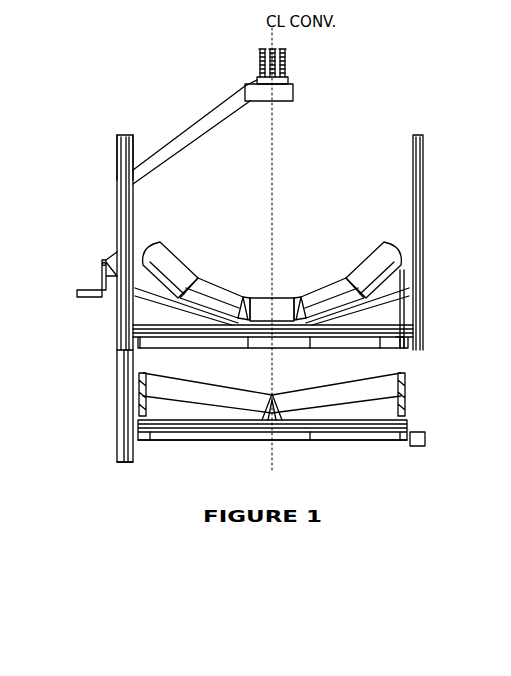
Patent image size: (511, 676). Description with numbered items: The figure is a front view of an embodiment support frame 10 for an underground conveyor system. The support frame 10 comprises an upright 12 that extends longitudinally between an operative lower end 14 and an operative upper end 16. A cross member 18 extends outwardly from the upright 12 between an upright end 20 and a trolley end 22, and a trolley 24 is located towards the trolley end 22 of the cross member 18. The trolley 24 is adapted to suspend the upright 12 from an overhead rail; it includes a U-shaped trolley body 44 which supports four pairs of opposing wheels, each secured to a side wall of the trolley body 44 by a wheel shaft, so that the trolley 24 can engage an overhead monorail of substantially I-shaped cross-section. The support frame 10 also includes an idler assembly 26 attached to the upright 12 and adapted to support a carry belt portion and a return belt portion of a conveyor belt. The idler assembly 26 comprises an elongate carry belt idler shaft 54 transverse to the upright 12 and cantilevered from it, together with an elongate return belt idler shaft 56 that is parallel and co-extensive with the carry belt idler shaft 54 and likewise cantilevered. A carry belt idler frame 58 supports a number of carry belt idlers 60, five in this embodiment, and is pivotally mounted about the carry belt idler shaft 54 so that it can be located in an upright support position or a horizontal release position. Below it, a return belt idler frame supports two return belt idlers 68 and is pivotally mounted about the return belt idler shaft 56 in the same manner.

The support frame 10 is at (427, 190).
The upright 12 is at (115, 379).
The operative lower end 14 is at (125, 462).
The operative upper end 16 is at (117, 179).
The cross member 18 is at (170, 133).
The upright end 20 is at (117, 174).
The trolley end 22 is at (294, 92).
The trolley 24 is at (287, 62).
The idler assembly 26 is at (410, 383).
The U-shaped trolley body 44 is at (255, 66).
The carry belt idler shaft 54 is at (370, 345).
The return belt idler shaft 56 is at (362, 442).
The carry belt idler frame 58 is at (288, 290).
The carry belt idlers 60 is at (183, 260).
The return belt idlers 68 is at (213, 400).